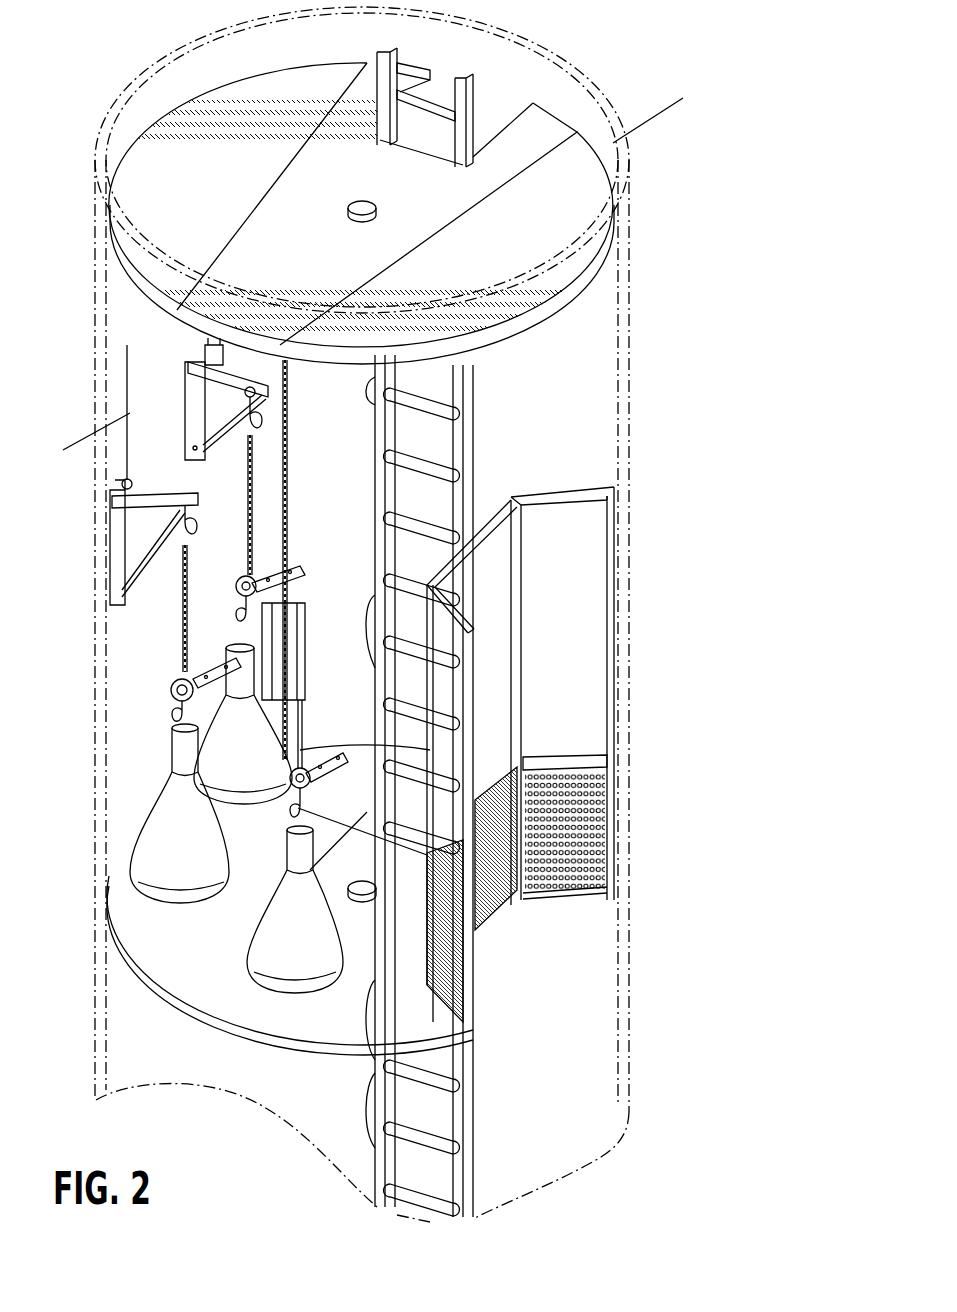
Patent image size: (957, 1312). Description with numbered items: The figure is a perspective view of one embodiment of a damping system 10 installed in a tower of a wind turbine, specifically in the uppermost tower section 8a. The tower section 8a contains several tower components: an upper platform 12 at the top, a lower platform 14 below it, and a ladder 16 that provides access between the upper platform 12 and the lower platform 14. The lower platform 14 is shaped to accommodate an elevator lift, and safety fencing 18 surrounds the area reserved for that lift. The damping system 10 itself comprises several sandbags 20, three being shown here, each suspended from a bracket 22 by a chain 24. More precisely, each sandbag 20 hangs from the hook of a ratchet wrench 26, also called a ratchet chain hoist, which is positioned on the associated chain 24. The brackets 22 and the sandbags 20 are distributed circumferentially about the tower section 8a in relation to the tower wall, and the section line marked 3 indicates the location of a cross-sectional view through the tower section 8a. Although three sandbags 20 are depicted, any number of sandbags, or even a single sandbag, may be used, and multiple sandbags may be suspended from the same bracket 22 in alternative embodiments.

The uppermost tower section 8a is at (147, 72).
The upper platform 12 is at (157, 178).
The ladder 16 is at (475, 88).
The safety fencing 18 is at (574, 757).
The lower platform 14 is at (127, 967).
The damping system 10 is at (144, 725).
The bracket 22 is at (118, 568).
The chain 24 is at (187, 627).
The ratchet wrench 26 is at (168, 683).
The sandbag 20 is at (150, 803).
The section line 3- 3 is at (675, 170).